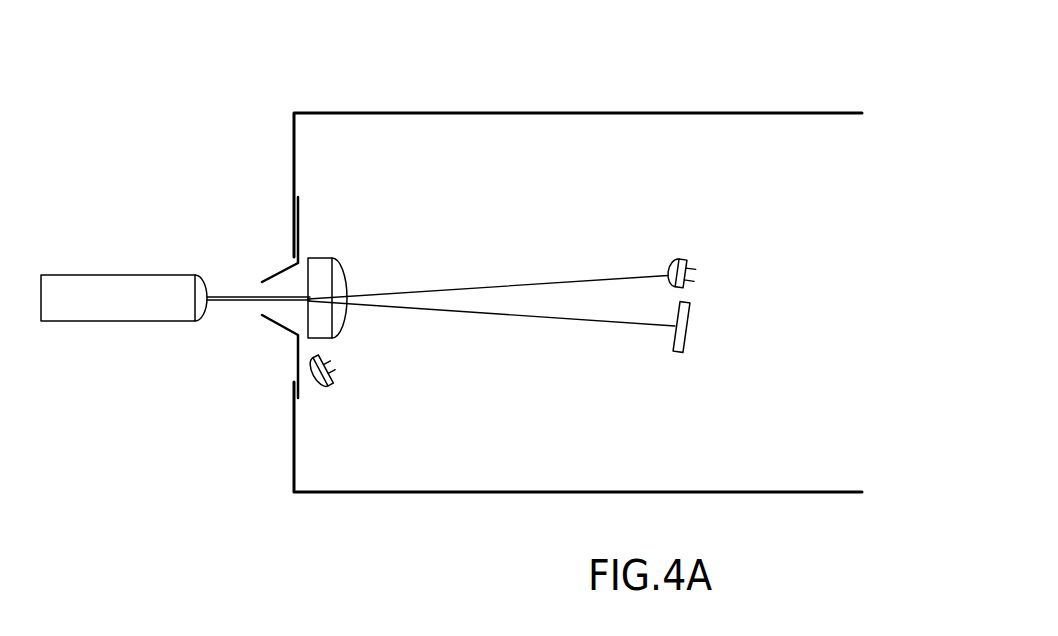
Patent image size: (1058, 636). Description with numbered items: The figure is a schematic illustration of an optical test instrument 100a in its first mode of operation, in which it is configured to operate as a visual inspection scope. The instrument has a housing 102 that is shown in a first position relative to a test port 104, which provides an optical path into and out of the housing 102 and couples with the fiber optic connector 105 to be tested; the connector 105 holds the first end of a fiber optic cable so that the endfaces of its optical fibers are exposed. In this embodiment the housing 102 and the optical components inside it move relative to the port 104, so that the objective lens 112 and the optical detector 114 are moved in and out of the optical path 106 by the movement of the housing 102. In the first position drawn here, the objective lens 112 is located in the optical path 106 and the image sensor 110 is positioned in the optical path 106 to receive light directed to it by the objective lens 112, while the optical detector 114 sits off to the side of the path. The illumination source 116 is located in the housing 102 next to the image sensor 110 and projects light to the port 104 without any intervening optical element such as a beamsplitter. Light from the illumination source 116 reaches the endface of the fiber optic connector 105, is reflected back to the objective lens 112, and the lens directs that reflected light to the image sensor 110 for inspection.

The optical test instrument 100a is at (730, 47).
The housing 102 is at (403, 112).
The test port 104 is at (278, 273).
The fiber optic connector 105 is at (103, 322).
The optical path 106 is at (463, 285).
The image sensor 110 is at (688, 332).
The objective lens 112 is at (320, 257).
The optical detector 114 is at (328, 387).
The illumination source 116 is at (680, 260).